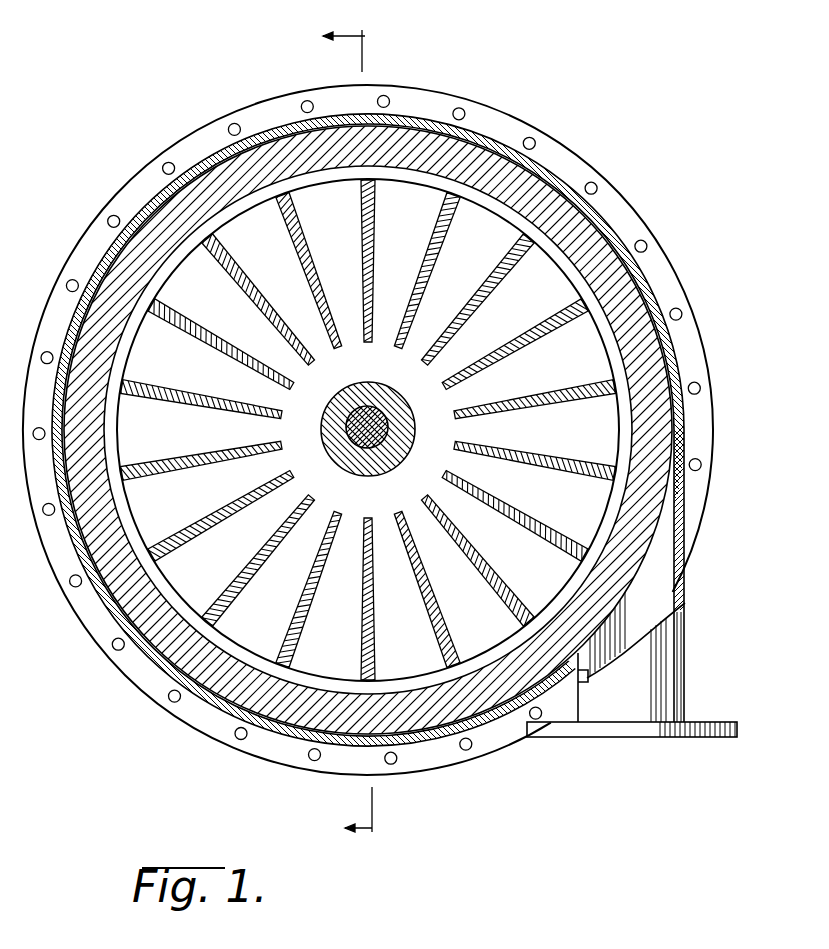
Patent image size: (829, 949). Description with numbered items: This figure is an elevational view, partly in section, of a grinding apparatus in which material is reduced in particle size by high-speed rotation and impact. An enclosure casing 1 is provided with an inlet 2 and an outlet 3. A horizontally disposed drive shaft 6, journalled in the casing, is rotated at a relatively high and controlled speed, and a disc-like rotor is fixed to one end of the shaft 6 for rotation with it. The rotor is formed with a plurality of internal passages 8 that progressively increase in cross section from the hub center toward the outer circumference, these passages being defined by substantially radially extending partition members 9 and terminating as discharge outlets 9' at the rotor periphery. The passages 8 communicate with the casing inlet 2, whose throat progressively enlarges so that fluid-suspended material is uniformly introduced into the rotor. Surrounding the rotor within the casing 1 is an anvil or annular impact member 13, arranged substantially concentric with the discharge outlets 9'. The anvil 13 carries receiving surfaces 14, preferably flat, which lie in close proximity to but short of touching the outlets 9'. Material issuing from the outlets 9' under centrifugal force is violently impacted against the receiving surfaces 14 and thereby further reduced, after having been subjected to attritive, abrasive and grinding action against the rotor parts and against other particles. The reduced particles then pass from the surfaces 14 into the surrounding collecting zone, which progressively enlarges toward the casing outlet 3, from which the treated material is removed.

The enclosure casing 1 is at (487, 106).
The inlet 2 is at (367, 433).
The outlet 3 is at (655, 738).
The drive shaft 6 is at (366, 447).
The internal passages 8 is at (367, 429).
The partition members 9 is at (355, 430).
The discharge outlets 9' is at (367, 429).
The annular impact member 13 is at (137, 608).
The receiving surfaces 14 is at (597, 556).